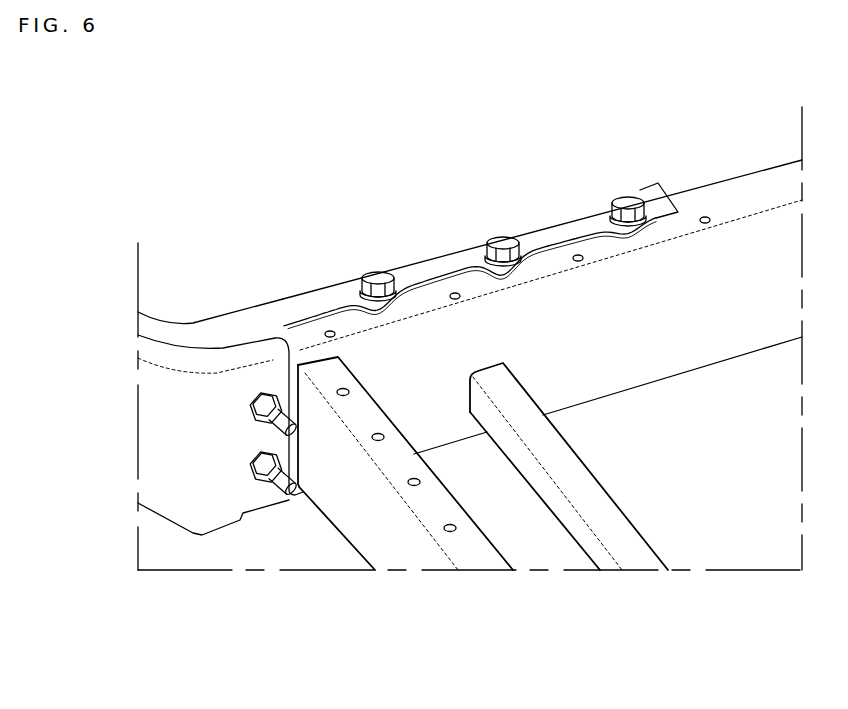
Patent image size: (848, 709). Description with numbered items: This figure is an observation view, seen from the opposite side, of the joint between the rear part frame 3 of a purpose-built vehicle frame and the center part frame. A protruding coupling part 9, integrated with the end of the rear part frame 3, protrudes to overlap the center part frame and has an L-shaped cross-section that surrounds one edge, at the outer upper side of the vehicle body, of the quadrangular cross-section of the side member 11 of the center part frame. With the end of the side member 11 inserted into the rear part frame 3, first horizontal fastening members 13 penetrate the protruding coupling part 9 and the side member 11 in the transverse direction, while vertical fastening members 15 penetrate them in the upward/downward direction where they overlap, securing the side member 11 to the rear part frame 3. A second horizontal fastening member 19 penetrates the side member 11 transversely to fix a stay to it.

The rear part frame 3 is at (250, 322).
The protruding coupling part 9 is at (442, 268).
The side member 11 is at (728, 195).
The first horizontal fastening member 13 is at (289, 437).
The vertical fastening member 15 is at (627, 196).
The second horizontal fastening member 19 is at (293, 502).